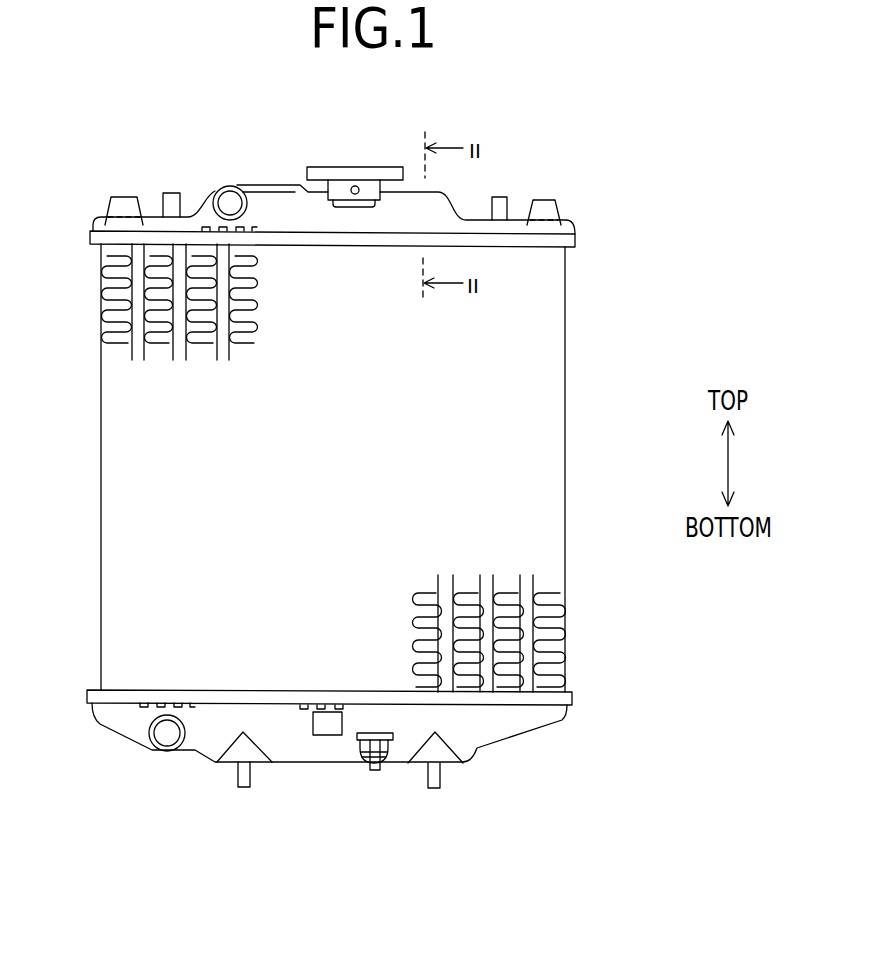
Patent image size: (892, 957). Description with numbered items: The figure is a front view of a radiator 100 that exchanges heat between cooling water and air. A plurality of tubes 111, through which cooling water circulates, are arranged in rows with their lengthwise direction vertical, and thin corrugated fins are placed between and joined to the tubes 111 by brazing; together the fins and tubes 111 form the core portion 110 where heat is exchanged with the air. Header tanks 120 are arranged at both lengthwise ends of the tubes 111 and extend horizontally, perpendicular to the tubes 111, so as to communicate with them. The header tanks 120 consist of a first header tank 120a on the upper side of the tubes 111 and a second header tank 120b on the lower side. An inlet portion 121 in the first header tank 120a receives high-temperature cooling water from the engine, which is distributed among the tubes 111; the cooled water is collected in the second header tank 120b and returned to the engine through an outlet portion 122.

The radiator 100 is at (582, 261).
The core portion 110 is at (537, 485).
The tubes 111 is at (453, 577).
The header tanks 120 is at (347, 471).
The first header tank 120a is at (452, 212).
The second header tank 120b is at (323, 748).
The inlet portion 121 is at (218, 192).
The outlet portion 122 is at (163, 740).